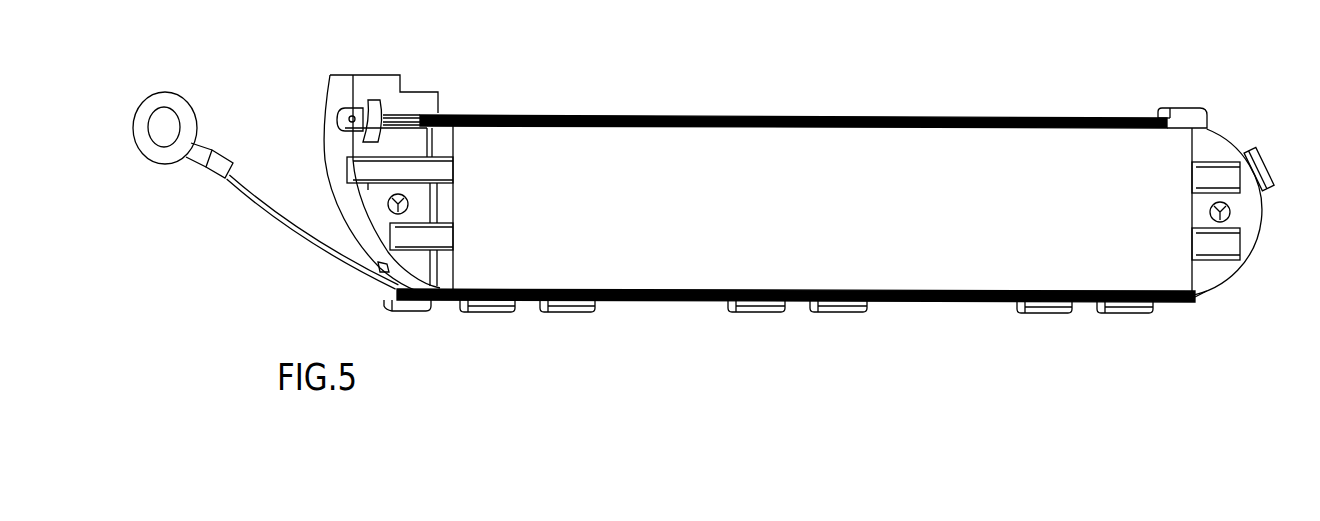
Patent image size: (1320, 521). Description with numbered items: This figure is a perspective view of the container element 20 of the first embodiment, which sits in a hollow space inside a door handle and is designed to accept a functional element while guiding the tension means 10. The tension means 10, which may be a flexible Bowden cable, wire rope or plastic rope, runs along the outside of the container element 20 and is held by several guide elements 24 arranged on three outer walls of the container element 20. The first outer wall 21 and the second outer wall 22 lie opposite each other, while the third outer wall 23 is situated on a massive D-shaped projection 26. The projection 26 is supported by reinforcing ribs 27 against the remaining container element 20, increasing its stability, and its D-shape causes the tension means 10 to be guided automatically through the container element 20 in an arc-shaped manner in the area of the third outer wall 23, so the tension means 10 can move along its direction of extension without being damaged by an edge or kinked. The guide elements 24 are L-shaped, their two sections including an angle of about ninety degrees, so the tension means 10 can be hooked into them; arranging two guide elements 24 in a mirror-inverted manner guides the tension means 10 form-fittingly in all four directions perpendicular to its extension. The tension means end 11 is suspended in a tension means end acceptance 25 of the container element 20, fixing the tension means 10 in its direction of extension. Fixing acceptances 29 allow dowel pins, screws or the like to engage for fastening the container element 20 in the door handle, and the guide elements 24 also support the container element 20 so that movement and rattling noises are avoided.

The tension means 10 is at (832, 125).
The tension means end 11 is at (405, 115).
The container element 20 is at (767, 160).
The first outer wall 21 is at (652, 302).
The second outer wall 22 is at (718, 118).
The third outer wall 23 is at (1262, 216).
The guide elements 24 is at (1193, 110).
The tension means end acceptance 25 is at (381, 100).
The D-shaped projection 26 is at (1227, 268).
The reinforcing ribs 27 is at (1227, 317).
The fixing acceptances 29 is at (392, 201).